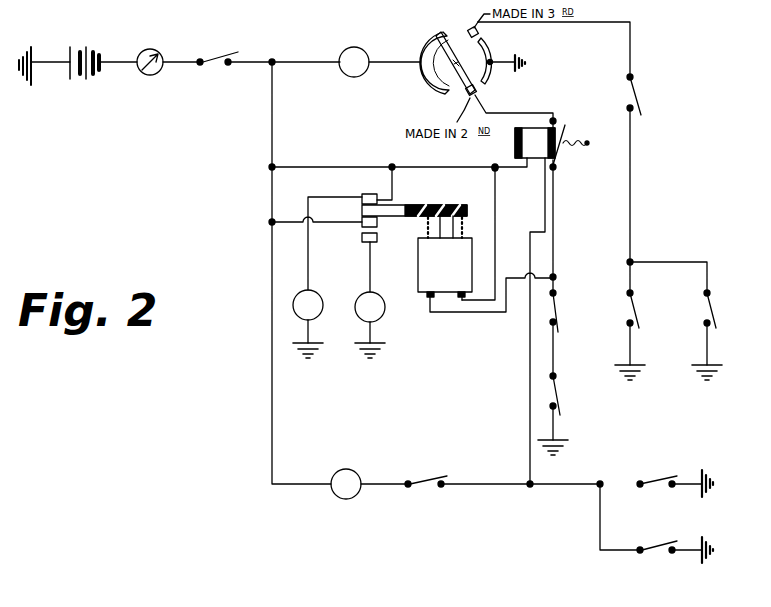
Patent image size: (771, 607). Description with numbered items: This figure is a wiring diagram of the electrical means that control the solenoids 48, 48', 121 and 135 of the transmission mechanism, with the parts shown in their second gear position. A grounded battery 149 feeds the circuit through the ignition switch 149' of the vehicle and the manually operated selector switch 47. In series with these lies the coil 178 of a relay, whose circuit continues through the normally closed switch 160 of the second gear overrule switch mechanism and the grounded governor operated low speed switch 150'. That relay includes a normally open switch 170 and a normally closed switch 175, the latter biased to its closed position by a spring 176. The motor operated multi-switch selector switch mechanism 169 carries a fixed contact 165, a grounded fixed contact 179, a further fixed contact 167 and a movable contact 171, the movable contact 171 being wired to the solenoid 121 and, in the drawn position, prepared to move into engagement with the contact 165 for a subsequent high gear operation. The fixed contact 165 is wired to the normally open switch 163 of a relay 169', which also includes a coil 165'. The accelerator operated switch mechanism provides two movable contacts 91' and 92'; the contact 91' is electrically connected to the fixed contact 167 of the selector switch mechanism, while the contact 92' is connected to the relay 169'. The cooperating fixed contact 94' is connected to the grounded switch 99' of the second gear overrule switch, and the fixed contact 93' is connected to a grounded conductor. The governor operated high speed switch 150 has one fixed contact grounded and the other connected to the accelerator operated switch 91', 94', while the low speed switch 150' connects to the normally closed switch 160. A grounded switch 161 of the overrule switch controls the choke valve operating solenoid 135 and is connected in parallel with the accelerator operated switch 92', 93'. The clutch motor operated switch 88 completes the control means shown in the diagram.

The relay 149 is at (274, 206).
The ignition switch 149' is at (162, 87).
The manually operated selector switch 47 is at (218, 70).
The solenoid 121 is at (352, 48).
The motor operated multi-switch selector switch mechanism 169 is at (413, 55).
The movable contact 171 is at (446, 68).
The grounded fixed contact 179 is at (492, 55).
The fixed contact 167 is at (470, 31).
The fixed contact 165 is at (489, 70).
The coil 165' is at (561, 114).
The normally open switch 163 is at (568, 132).
The relay 169' is at (592, 168).
The movable contact 91' is at (682, 89).
The fixed contact 94' is at (682, 89).
The normally closed switch 175 is at (366, 194).
The normally open switch 170 is at (362, 229).
The spring 176 is at (465, 218).
The coil 178 is at (426, 257).
The solenoid 48 is at (387, 317).
The solenoid 48' is at (301, 343).
The normally closed switch 160 is at (560, 306).
The high speed switch 150 is at (613, 316).
The grounded switch 99' is at (732, 300).
The low speed switch 150' is at (589, 395).
The choke valve operating solenoid 135 is at (344, 494).
The clutch motor operated switch 88 is at (432, 489).
The movable contact 92' is at (689, 463).
The fixed contact 93' is at (689, 463).
The grounded switch 161 is at (657, 555).